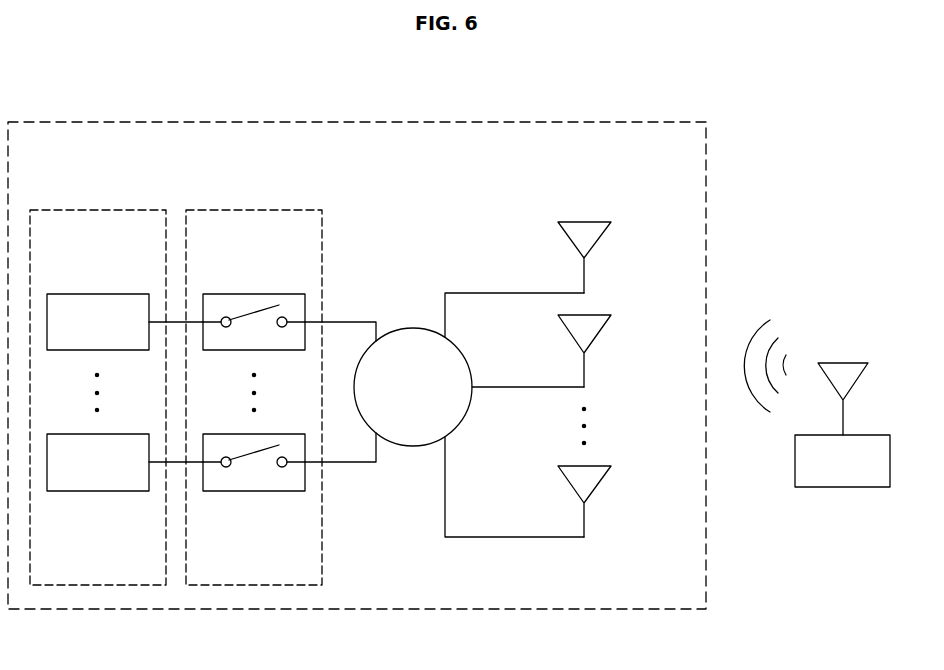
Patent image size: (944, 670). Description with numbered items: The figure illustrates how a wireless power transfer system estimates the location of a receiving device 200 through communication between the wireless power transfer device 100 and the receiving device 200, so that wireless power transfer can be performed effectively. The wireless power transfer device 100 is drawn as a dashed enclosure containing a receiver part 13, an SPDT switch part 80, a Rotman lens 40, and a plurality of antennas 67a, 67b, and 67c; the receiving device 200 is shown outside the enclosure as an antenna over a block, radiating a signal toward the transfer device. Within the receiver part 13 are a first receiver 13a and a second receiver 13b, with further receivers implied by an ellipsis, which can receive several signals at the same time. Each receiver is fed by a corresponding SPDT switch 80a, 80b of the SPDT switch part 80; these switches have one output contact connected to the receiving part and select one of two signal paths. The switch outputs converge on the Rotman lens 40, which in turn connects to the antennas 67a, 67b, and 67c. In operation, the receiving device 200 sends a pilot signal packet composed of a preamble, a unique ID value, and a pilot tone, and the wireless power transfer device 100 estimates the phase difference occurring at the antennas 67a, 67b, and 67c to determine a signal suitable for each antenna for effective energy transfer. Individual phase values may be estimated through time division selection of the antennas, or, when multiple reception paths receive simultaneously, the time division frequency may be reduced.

The wireless power transfer device 100 is at (472, 122).
The receiver part 13 is at (97, 210).
The first receiver 13a is at (97, 294).
The second receiver 13b is at (97, 491).
The SPDT switch part 80 is at (253, 210).
The SPDT switch 80a is at (253, 294).
The SPDT switch 80b is at (254, 491).
The Rotman lens 40 is at (413, 328).
The antenna 67a is at (600, 241).
The antenna 67b is at (600, 334).
The antenna 67c is at (600, 484).
The receiving device 200 is at (843, 487).